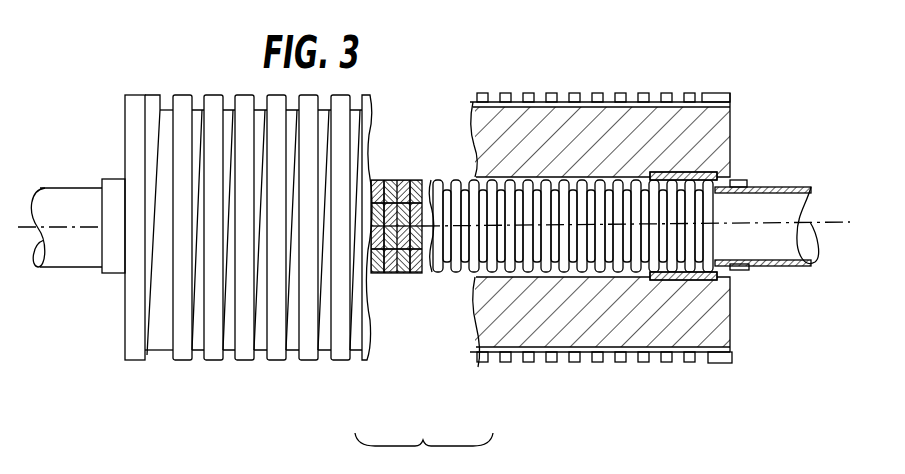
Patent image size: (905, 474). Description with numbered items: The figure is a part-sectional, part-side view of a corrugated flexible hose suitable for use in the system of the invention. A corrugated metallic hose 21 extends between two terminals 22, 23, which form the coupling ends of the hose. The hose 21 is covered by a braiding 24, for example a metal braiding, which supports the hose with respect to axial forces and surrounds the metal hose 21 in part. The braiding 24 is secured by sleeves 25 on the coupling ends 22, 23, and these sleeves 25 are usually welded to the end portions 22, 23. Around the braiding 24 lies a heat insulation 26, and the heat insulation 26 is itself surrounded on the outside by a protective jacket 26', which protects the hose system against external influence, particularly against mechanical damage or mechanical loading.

The corrugated metallic hose 21 is at (458, 277).
The terminal 22 is at (77, 202).
The terminal 23 is at (773, 186).
The braiding 24 is at (392, 180).
The sleeve 25 is at (667, 281).
The heat insulation 26 is at (609, 196).
The protective jacket 26' is at (603, 194).